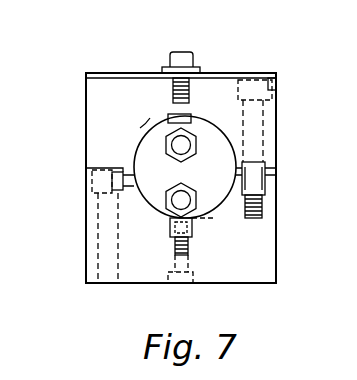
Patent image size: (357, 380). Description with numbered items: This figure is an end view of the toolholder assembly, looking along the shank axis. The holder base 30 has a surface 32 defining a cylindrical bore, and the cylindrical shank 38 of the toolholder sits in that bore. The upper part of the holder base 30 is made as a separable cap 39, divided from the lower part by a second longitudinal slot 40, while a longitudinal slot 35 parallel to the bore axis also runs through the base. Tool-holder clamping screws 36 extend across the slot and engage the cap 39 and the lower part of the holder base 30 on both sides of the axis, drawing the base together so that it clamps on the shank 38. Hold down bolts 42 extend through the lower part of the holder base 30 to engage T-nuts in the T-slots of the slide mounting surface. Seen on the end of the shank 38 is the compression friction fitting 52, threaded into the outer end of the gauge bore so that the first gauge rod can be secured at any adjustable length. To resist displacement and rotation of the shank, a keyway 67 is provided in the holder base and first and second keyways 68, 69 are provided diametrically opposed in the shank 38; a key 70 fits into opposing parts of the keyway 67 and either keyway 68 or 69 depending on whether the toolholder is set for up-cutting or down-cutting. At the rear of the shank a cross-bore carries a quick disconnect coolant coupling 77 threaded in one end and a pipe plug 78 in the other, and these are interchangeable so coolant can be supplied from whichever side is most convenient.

The holder base 30 is at (272, 243).
The surface 32 is at (140, 128).
The longitudinal slot 35 is at (266, 171).
The tool-holder clamping screws 36 is at (278, 83).
The cylindrical shank 38 is at (217, 137).
The cap 39 is at (218, 82).
The second longitudinal slot 40 is at (87, 168).
The hold down bolts 42 is at (98, 245).
The compression friction fitting 52 is at (197, 148).
The keyway 67 is at (166, 236).
The first keyway 68 is at (170, 221).
The second keyway 69 is at (163, 113).
The key 70 is at (215, 220).
The quick disconnect coolant coupling 77 is at (276, 160).
The pipe plug 78 is at (118, 192).